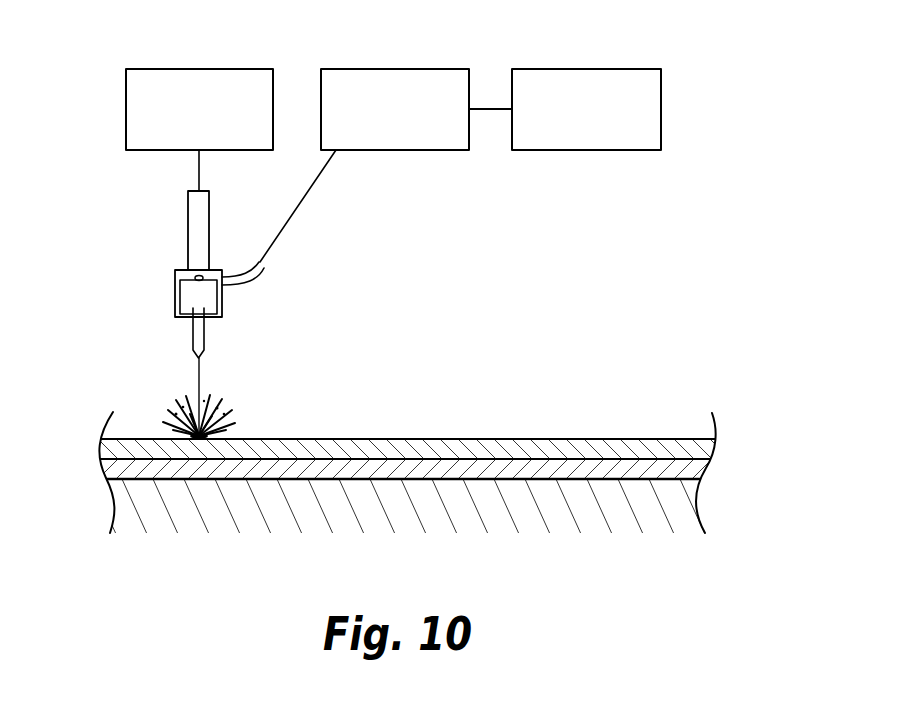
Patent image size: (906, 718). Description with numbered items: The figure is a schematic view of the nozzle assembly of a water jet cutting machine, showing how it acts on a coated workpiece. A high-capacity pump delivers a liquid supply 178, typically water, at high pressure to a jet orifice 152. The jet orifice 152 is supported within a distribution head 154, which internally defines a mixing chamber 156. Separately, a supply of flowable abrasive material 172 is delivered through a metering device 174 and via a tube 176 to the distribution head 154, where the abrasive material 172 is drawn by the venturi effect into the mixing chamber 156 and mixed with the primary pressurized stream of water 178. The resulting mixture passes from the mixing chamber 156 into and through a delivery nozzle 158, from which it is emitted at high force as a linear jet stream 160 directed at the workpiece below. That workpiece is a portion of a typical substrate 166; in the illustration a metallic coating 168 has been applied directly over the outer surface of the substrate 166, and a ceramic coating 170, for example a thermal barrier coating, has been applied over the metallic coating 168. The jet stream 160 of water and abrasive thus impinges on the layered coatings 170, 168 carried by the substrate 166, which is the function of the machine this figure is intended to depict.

The jet orifice 152 is at (192, 275).
The distribution head 154 is at (176, 280).
The mixing chamber 156 is at (188, 298).
The delivery nozzle 158 is at (204, 342).
The jet stream 160 is at (198, 386).
The substrate 166 is at (683, 490).
The metallic coating 168 is at (695, 466).
The ceramic coating 170 is at (707, 450).
The abrasive material 172 is at (597, 69).
The metering device 174 is at (405, 69).
The tube 176 is at (258, 268).
The liquid supply 178 is at (126, 98).